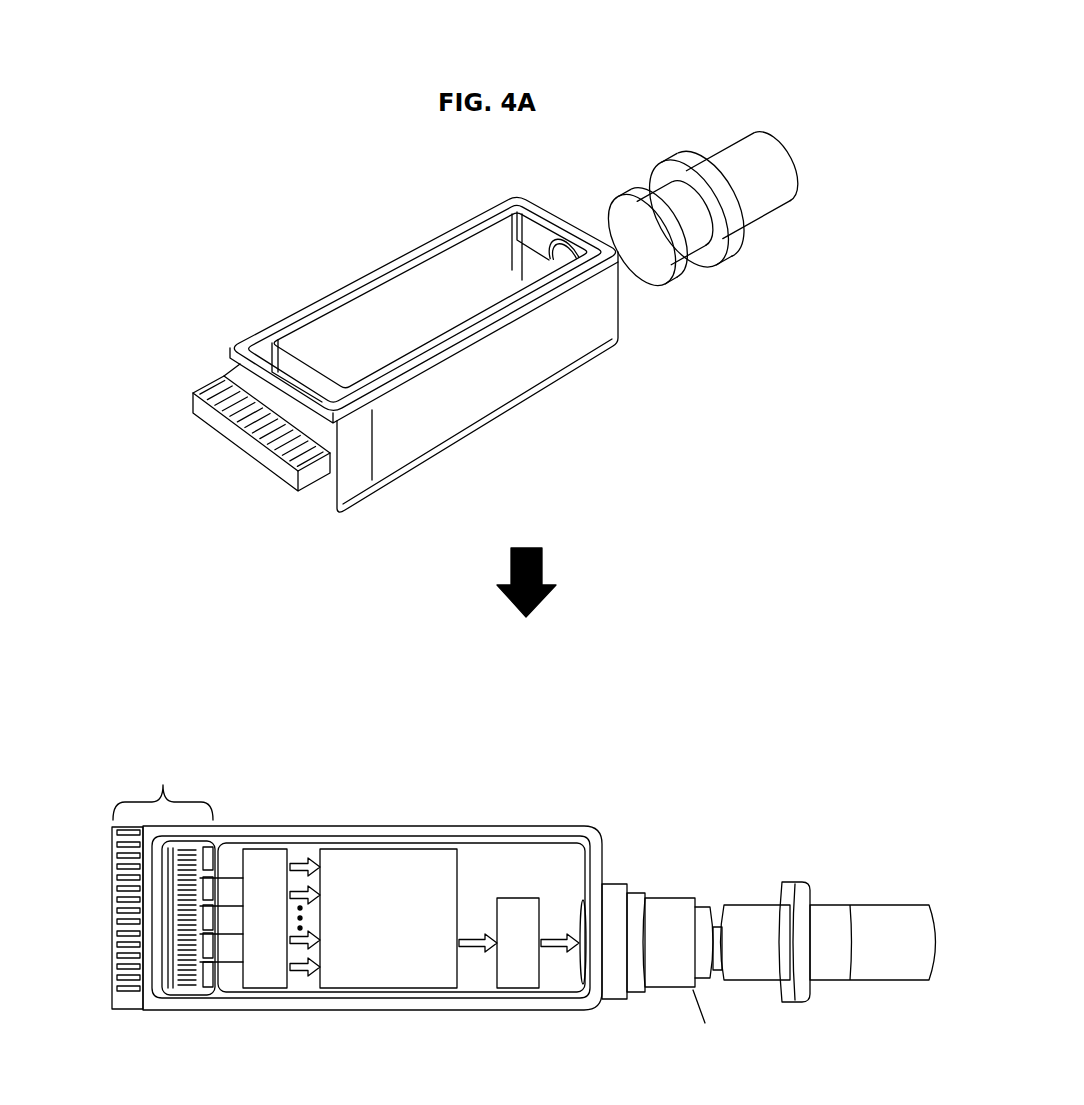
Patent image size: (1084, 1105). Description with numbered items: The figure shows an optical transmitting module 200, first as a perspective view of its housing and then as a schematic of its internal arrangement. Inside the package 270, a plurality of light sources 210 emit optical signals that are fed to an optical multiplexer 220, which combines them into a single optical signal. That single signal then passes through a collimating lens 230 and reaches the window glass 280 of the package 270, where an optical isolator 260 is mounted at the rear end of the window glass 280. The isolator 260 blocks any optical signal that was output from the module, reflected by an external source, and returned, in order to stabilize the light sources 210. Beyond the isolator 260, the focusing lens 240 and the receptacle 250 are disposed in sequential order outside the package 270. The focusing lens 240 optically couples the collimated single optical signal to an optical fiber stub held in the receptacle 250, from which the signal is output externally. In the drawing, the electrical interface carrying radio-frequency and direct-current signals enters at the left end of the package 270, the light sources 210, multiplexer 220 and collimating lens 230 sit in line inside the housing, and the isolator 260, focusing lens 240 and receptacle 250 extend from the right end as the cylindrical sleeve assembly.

The optical transmitting module 200 is at (531, 705).
The light sources 210 is at (264, 982).
The optical multiplexer 220 is at (388, 980).
The collimating lens 230 is at (519, 980).
The focusing lens 240 is at (704, 918).
The receptacle 250 is at (831, 918).
The optical isolator 260 is at (633, 900).
The package 270 is at (445, 830).
The window glass 280 is at (584, 985).